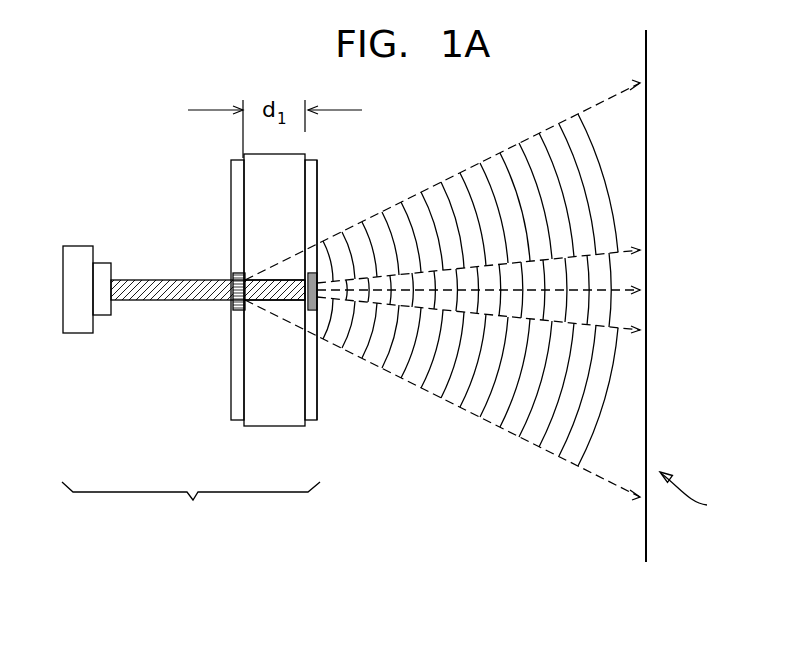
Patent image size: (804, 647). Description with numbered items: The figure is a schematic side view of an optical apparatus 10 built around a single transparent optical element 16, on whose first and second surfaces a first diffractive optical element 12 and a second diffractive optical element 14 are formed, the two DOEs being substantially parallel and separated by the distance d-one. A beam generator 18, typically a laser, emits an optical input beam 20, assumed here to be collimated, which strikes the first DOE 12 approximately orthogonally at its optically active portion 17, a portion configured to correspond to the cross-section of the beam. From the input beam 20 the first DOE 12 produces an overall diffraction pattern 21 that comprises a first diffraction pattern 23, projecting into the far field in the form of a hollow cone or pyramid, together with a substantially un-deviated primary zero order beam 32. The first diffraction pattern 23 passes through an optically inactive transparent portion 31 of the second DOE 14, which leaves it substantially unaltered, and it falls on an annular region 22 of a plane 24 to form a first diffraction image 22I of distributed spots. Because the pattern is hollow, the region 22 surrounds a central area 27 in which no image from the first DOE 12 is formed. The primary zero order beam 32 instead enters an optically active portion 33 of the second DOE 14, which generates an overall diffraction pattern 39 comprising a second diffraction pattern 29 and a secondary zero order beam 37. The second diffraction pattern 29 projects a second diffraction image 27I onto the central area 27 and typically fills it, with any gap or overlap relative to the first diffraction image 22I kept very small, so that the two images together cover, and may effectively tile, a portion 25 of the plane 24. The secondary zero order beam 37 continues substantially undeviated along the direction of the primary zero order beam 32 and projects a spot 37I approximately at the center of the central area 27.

The optical apparatus 10 is at (191, 508).
The first diffractive optical element 12 is at (237, 421).
The second diffractive optical element 14 is at (312, 421).
The single transparent optical element 16 is at (290, 156).
The optically active portion 17 is at (242, 311).
The beam generator 18 is at (82, 334).
The optical input beam 20 is at (167, 300).
The overall diffraction pattern 21 is at (410, 194).
The region 22 is at (646, 137).
The first diffraction image 22I is at (646, 192).
The first diffraction pattern 23 is at (497, 188).
The plane 24 is at (646, 523).
The portion 25 is at (699, 495).
The central area 27 is at (646, 327).
The second diffraction image 27I is at (646, 311).
The second diffraction pattern 29 is at (597, 273).
The optically inactive transparent portion 31 is at (318, 216).
The primary zero order beam 32 is at (270, 301).
The optically active portion 33 is at (313, 276).
The secondary zero order beam 37 is at (618, 289).
The spot 37I is at (646, 291).
The overall diffraction pattern 39 is at (505, 427).